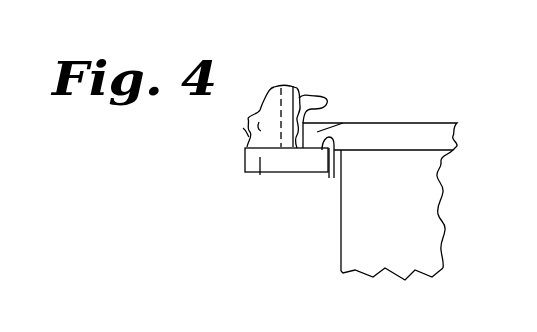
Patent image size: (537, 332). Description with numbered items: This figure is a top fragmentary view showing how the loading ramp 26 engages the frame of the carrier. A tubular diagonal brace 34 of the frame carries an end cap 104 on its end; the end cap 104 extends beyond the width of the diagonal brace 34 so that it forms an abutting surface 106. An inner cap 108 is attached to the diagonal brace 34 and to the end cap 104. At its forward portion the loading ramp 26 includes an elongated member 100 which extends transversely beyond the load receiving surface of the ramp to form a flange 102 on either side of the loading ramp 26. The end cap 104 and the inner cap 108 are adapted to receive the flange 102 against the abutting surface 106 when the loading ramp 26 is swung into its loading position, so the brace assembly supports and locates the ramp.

The loading ramp 26 is at (445, 222).
The diagonal brace 34 is at (243, 128).
The elongated member 100 is at (390, 134).
The flange 102 is at (330, 128).
The end cap 104 is at (260, 175).
The abutting surface 106 is at (333, 179).
The inner cap 108 is at (305, 96).